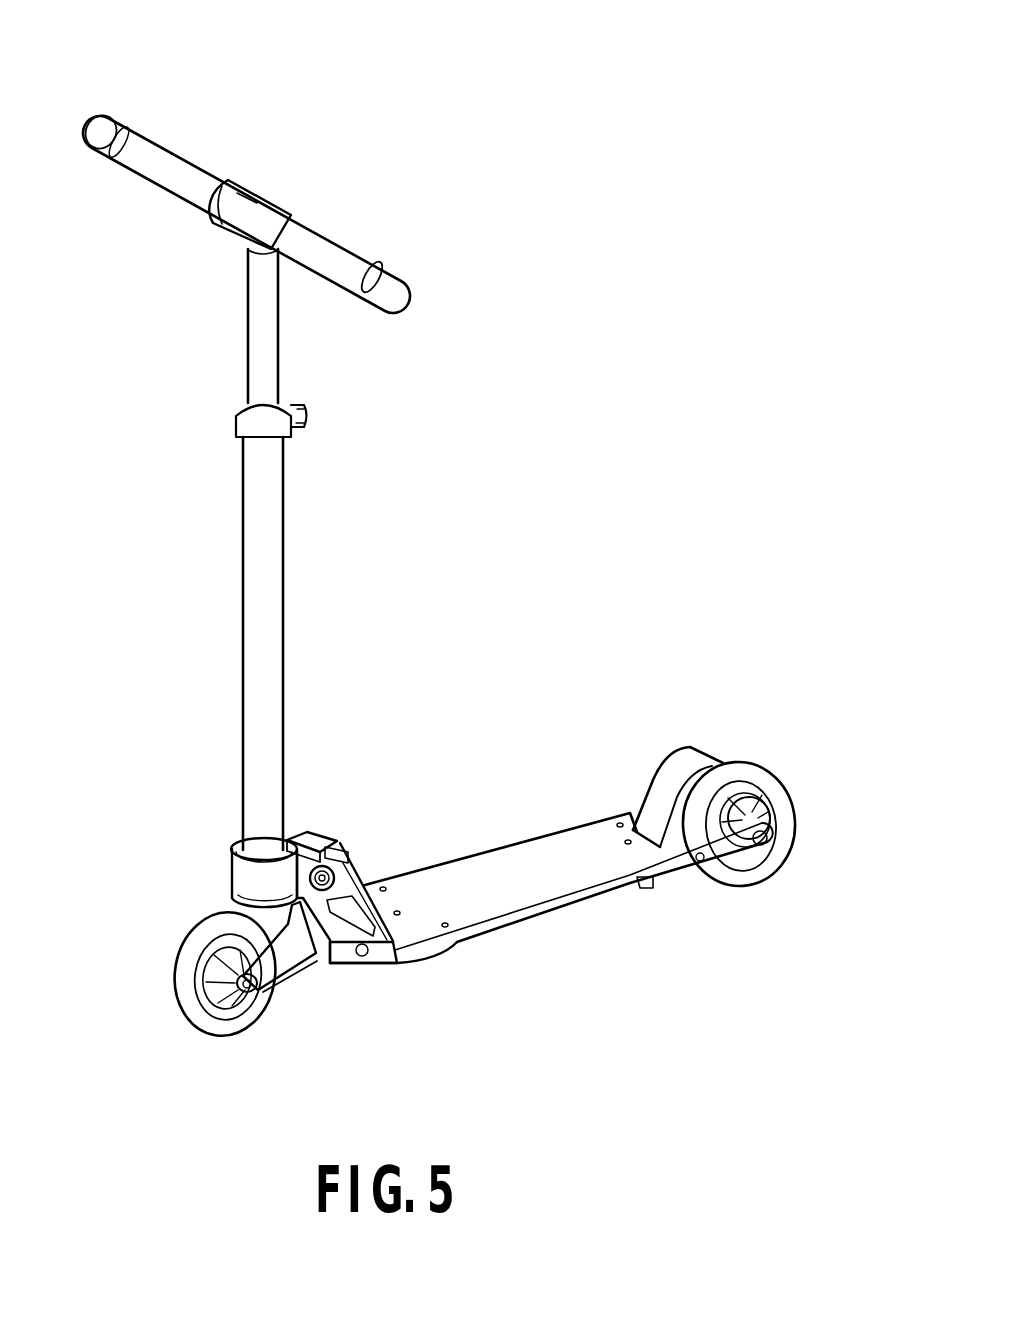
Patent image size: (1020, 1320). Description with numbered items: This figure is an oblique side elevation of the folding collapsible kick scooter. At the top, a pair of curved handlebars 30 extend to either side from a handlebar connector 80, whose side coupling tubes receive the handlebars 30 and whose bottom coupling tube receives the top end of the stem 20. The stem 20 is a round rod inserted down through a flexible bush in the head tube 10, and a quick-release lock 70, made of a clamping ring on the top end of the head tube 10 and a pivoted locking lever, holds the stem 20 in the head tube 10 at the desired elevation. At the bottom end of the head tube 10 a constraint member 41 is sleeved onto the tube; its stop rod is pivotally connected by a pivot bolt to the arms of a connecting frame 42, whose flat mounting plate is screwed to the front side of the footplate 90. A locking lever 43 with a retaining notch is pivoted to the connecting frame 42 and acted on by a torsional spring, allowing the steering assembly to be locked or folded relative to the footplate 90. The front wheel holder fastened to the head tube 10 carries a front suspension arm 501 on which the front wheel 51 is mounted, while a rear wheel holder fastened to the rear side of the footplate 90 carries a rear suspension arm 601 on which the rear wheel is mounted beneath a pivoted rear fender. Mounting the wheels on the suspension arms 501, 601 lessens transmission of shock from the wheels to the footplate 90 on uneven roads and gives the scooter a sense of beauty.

The handlebars 30 is at (145, 172).
The handlebar connector 80 is at (257, 213).
The stem 20 is at (257, 300).
The quick-release lock 70 is at (263, 427).
The head tube 10 is at (265, 548).
The constraint member 41 is at (240, 867).
The locking lever 43 is at (312, 835).
The connecting frame 42 is at (387, 968).
The front wheel 51 is at (190, 963).
The front suspension arm 501 is at (273, 972).
The footplate 90 is at (473, 870).
The rear suspension arm 601 is at (737, 848).